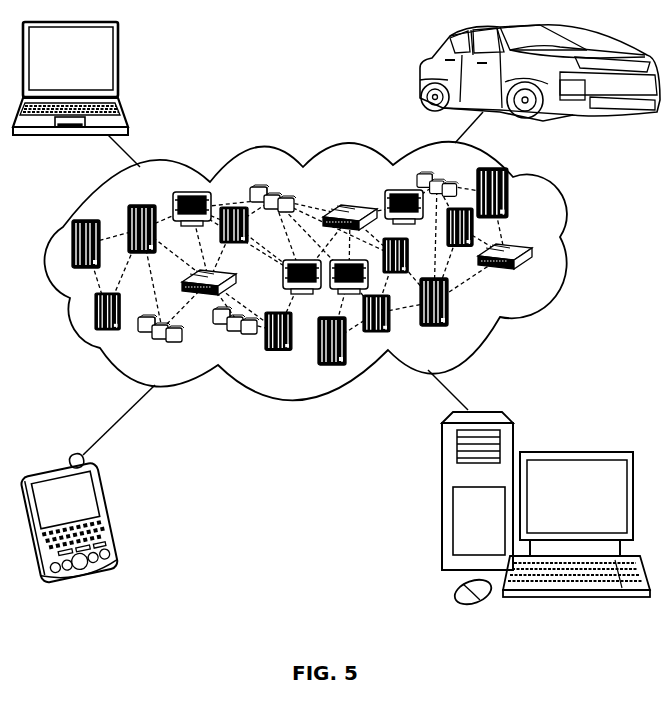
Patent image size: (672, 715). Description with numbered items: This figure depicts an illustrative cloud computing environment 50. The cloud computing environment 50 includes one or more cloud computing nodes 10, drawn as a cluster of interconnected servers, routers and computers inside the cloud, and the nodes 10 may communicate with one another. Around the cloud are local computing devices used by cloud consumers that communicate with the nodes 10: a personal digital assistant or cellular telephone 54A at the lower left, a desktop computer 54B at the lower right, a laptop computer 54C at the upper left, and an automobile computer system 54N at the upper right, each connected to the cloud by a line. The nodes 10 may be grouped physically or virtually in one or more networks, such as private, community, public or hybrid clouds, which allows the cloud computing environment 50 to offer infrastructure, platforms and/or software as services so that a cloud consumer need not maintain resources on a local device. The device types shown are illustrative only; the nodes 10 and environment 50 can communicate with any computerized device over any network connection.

The cloud computing nodes 10 is at (542, 274).
The cloud computing environment 50 is at (577, 252).
The personal digital assistant (PDA) or cellular telephone 54A is at (113, 515).
The desktop computer 54B is at (576, 451).
The laptop computer 54C is at (118, 62).
The automobile computer system 54N is at (420, 72).